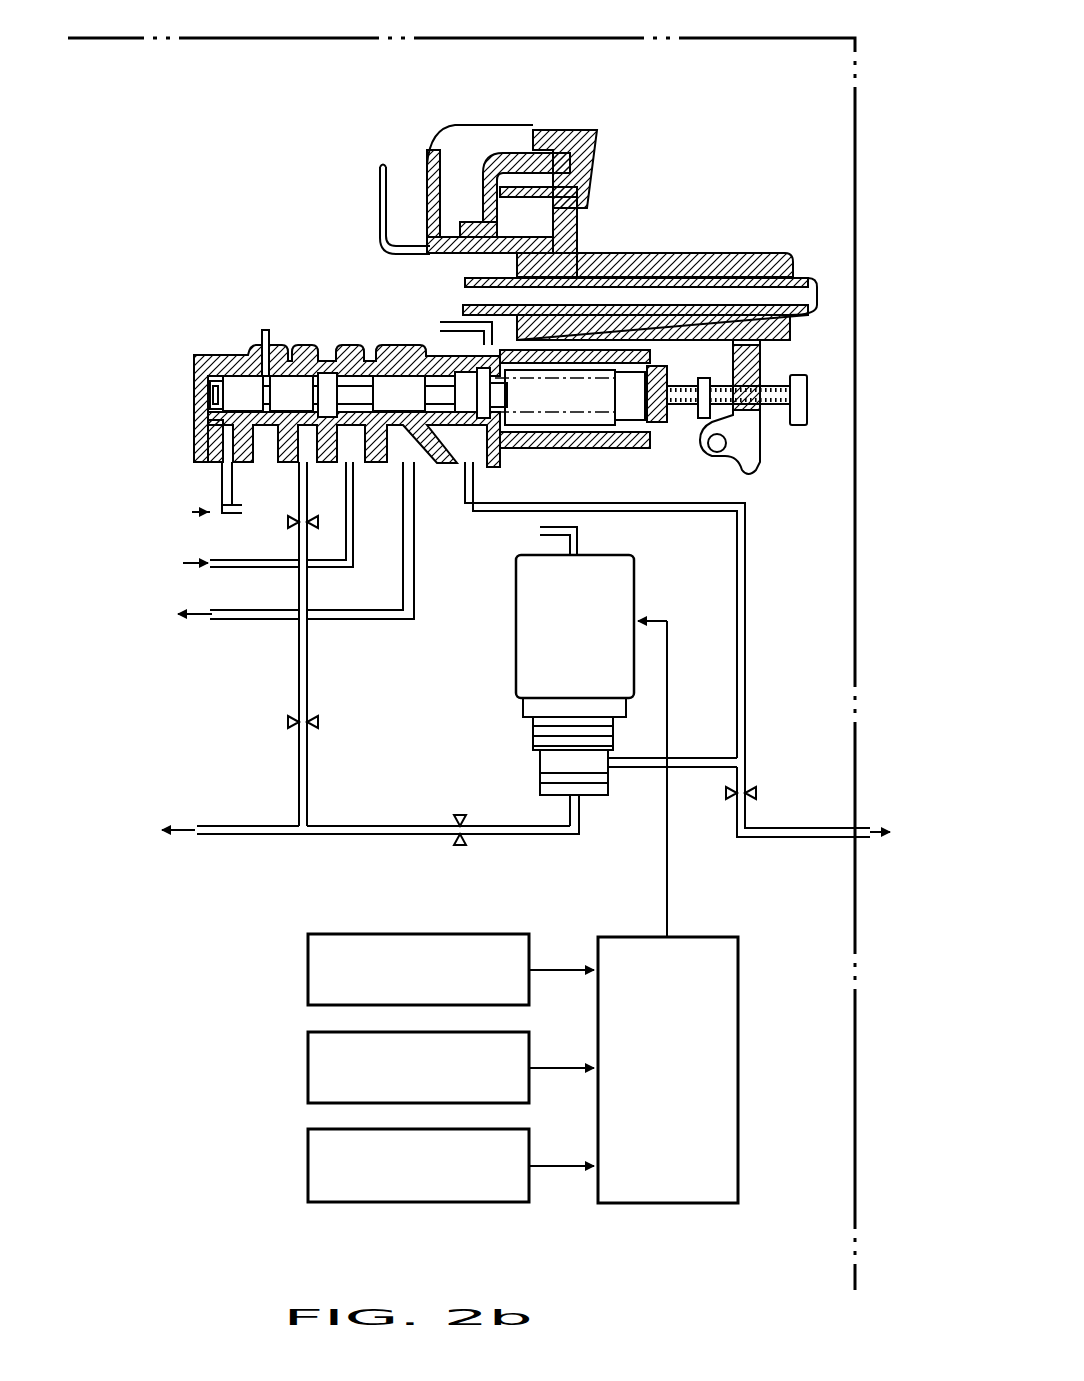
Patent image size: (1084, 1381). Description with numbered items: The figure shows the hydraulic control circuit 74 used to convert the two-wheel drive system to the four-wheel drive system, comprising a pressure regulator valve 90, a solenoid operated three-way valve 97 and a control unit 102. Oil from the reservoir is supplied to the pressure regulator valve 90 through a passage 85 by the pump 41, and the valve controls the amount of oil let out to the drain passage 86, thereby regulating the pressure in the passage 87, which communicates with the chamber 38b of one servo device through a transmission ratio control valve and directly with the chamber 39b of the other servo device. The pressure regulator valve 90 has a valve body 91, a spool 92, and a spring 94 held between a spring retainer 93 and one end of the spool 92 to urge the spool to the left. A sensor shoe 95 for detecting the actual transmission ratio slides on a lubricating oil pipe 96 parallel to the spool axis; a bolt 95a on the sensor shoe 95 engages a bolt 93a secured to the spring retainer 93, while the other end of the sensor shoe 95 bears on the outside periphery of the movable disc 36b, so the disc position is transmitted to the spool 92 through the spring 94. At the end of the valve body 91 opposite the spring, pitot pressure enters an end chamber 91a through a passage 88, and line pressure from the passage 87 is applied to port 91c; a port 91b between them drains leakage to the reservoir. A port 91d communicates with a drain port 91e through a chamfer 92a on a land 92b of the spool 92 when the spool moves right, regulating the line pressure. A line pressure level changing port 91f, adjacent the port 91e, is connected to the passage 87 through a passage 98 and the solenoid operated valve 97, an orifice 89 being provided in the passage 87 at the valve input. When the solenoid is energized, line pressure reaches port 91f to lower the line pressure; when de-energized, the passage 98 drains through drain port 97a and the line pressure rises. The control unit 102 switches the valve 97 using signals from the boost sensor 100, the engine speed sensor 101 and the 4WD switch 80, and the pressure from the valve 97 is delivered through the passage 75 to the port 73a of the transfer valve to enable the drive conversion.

The hydraulic control circuit 74 is at (306, 38).
The movable disc 36b is at (597, 182).
The lubricating oil pipe 96 is at (714, 262).
The pressure regulator valve 90 is at (469, 396).
The valve body 91 is at (226, 355).
The end chamber 91a is at (224, 457).
The port 91b is at (270, 343).
The port 91c is at (301, 455).
The port 91d is at (357, 453).
The drain port 91e is at (418, 452).
The line pressure level changing port 91f is at (473, 465).
The spool 92 is at (323, 349).
The chamfer 92a is at (371, 345).
The land 92b is at (412, 382).
The spring retainer 93 is at (588, 427).
The bolt 93a is at (690, 384).
The spring 94 is at (627, 430).
The sensor shoe 95 is at (762, 460).
The bolt 95a is at (792, 383).
The passage 88 is at (242, 512).
The passage 85 is at (266, 568).
The drain passage 86 is at (285, 623).
The passage 87 is at (336, 840).
The orifice 89 is at (460, 845).
The passage 98 is at (770, 653).
The solenoid operated three-way valve 97 is at (530, 612).
The drain port 97a is at (578, 546).
The passage 75 is at (830, 812).
The port 73a is at (916, 832).
The pump 41 is at (175, 566).
The chamber 38b is at (149, 811).
The chamber 39b is at (125, 833).
The boost sensor 100 is at (305, 993).
The engine speed sensor 101 is at (305, 1088).
The 4WD switch 80 is at (305, 1177).
The control unit 102 is at (740, 1017).